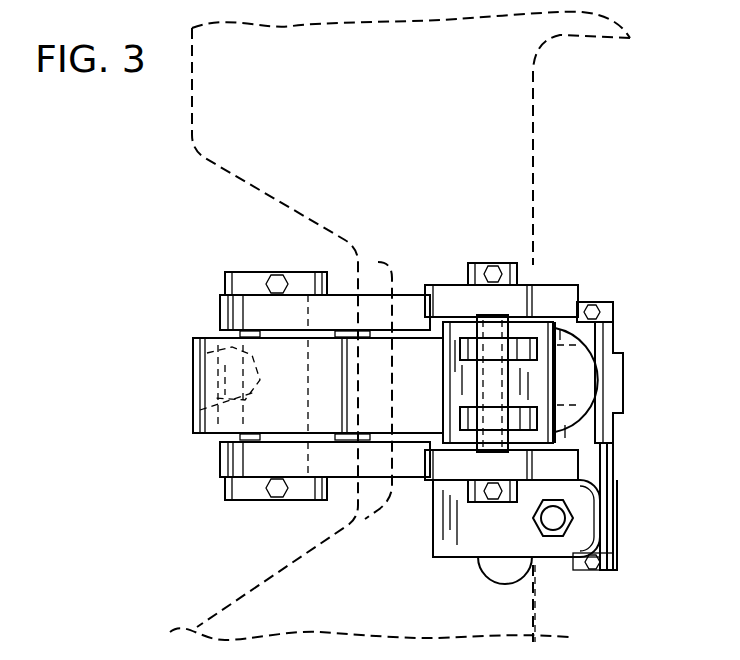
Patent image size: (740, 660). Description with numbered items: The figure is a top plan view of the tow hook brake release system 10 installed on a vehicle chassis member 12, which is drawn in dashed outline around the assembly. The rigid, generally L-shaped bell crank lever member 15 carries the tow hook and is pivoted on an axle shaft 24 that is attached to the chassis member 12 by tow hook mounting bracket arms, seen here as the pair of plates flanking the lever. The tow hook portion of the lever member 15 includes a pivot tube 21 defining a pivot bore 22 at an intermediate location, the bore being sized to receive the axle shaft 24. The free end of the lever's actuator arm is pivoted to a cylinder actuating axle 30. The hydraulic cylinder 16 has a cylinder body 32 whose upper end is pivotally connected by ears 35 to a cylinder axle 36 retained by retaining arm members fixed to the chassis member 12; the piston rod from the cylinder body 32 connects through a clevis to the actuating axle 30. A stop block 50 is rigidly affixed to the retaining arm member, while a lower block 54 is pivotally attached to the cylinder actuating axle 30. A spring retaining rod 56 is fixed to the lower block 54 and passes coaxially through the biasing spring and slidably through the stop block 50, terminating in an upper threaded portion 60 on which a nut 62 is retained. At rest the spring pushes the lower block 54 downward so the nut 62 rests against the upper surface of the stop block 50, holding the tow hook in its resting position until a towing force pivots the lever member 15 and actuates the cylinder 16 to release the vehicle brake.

The tow hook brake release system 10 is at (215, 247).
The vehicle chassis member 12 is at (535, 97).
The bell crank lever member 15 is at (185, 380).
The hydraulic cylinder 16 is at (600, 344).
The pivot tube 21 is at (193, 412).
The pivot bore 22 is at (260, 500).
The axle shaft 24 is at (193, 343).
The cylinder actuating axle 30 is at (613, 470).
The cylinder body 32 is at (583, 383).
The ears 35 is at (460, 423).
The cylinder axle 36 is at (510, 365).
The stop block 50 is at (507, 560).
The lower block 54 is at (630, 556).
The spring retaining rod 56 is at (578, 522).
The upper threaded portion 60 is at (537, 510).
The nut 62 is at (547, 537).